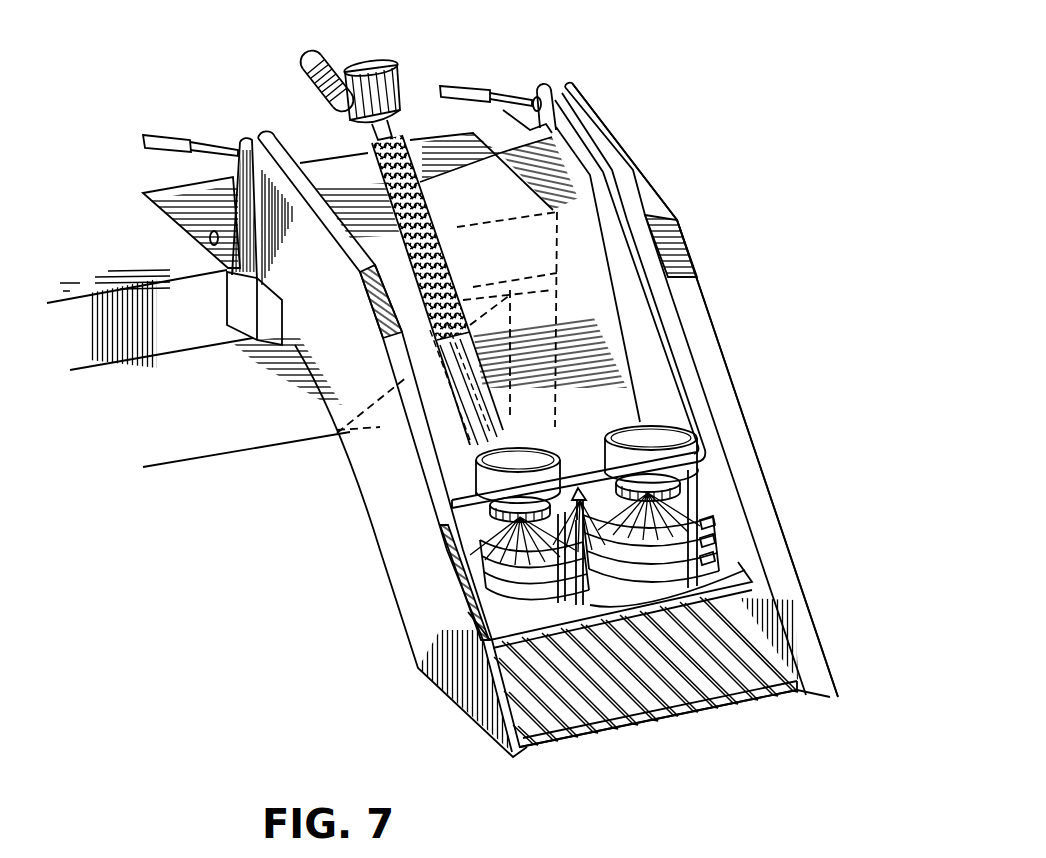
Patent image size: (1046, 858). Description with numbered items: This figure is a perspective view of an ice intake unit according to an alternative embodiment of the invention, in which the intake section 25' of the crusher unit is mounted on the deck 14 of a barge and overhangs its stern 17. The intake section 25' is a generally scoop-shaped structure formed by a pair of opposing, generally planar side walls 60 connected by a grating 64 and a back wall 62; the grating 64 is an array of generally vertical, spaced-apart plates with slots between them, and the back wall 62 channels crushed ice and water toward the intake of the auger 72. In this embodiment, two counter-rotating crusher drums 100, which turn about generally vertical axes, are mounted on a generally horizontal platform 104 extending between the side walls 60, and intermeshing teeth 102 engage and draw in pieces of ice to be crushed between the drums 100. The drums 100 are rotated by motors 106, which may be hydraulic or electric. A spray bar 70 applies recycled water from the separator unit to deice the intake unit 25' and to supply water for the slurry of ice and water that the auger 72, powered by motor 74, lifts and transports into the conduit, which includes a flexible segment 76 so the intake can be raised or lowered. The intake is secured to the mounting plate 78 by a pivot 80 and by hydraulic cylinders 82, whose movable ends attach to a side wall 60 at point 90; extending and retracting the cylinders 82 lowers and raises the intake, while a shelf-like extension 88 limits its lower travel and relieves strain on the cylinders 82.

The deck 14 is at (105, 222).
The stern 17 is at (195, 333).
The intake section 25' is at (679, 391).
The side walls 60 is at (712, 322).
The back wall 62 is at (610, 416).
The grating 64 is at (683, 713).
The spray bar 70 is at (690, 388).
The auger 72 is at (457, 290).
The motor 74 is at (365, 70).
The flexible segment 76 is at (312, 70).
The mounting plate 78 is at (160, 195).
The pivot 80 is at (210, 240).
The hydraulic cylinders 82 is at (165, 137).
The shelf-like extension 88 is at (259, 332).
The point 90 is at (565, 82).
The crusher drums 100 is at (720, 533).
The intermeshing teeth 102 is at (717, 562).
The platform 104 is at (527, 633).
The motors 106 is at (670, 434).